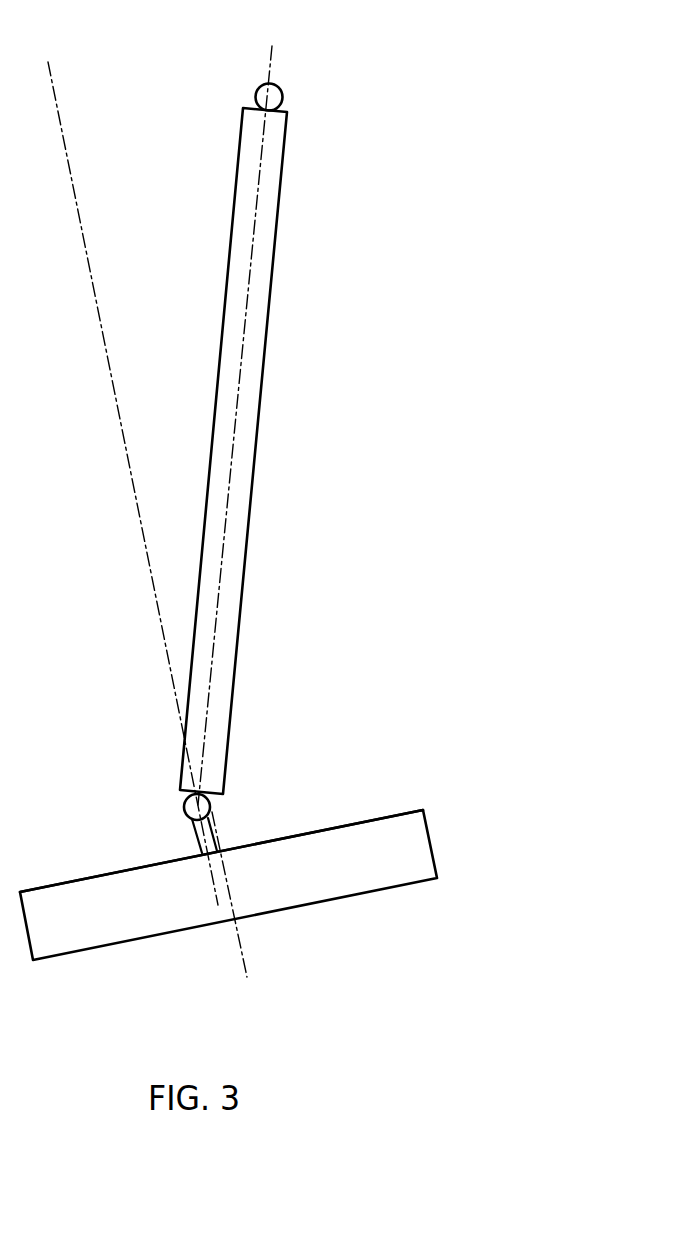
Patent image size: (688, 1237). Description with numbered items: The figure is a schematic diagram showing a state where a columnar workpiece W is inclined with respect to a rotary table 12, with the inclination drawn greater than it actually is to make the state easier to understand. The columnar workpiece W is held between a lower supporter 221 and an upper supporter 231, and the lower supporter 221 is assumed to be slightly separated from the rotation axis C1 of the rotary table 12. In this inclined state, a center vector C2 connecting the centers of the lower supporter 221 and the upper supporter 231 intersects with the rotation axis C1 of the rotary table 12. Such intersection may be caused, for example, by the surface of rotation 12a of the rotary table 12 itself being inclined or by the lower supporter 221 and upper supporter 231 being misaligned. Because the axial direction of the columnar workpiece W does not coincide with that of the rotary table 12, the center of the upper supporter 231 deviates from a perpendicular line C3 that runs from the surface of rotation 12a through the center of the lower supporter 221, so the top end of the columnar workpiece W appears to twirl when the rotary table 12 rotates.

The rotary table 12 is at (430, 845).
The surface of rotation 12a is at (382, 818).
The columnar workpiece W is at (267, 318).
The upper supporter 231 is at (285, 98).
The lower supporter 221 is at (183, 804).
The rotation axis C1 is at (213, 822).
The center vector C2 is at (274, 56).
The perpendicular line C3 is at (58, 110).